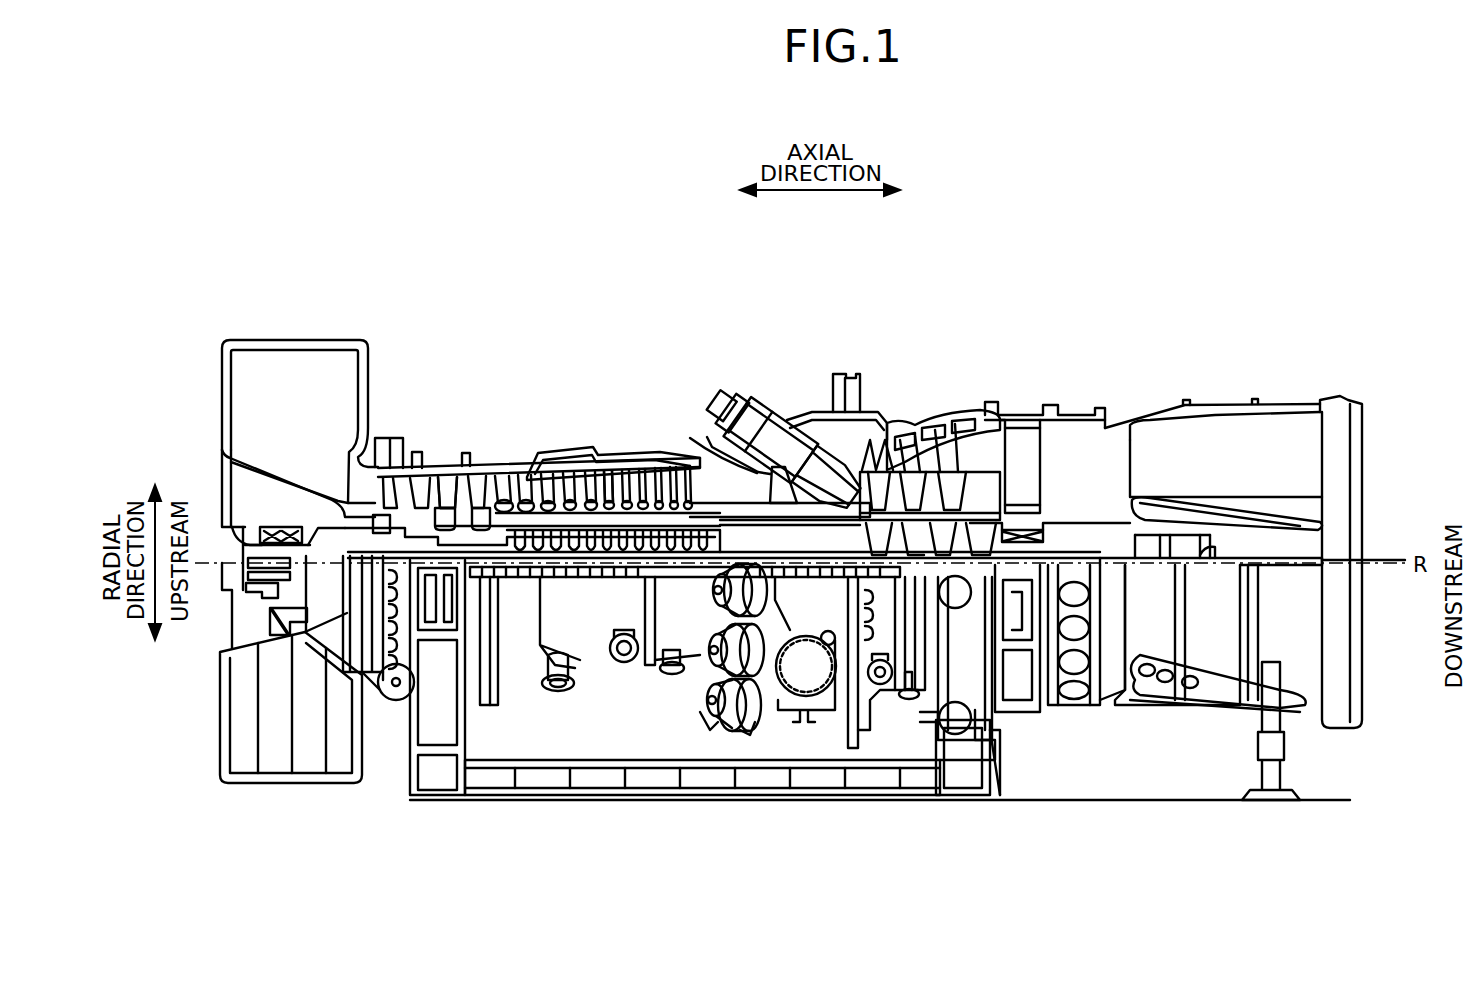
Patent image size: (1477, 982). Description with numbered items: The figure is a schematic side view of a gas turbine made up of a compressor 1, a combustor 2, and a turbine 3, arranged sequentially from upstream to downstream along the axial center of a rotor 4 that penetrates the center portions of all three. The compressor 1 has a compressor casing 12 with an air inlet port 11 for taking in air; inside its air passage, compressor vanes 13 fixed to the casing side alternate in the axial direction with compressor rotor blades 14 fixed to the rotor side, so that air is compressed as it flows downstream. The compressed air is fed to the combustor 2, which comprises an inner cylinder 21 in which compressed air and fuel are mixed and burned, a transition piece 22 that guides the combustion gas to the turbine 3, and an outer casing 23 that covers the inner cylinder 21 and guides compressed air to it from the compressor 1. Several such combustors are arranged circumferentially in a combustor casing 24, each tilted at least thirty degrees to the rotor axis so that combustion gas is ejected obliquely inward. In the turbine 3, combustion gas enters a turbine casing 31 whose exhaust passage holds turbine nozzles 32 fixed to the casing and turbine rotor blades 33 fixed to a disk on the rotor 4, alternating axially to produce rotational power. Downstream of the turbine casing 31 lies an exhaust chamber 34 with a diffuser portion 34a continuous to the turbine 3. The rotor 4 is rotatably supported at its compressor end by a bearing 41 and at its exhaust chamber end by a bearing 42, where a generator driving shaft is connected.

The compressor 1 is at (445, 408).
The combustor 2 is at (799, 378).
The turbine 3 is at (988, 420).
The rotor 4 is at (760, 538).
The air inlet port 11 is at (237, 402).
The compressor casing 12 is at (622, 478).
The compressor vane 13 is at (447, 480).
The compressor rotor blade 14 is at (502, 490).
The inner cylinder 21 is at (764, 420).
The transition piece 22 is at (800, 448).
The outer casing 23 is at (745, 410).
The combustor casing 24 is at (806, 404).
The turbine casing 31 is at (930, 425).
The turbine nozzle 32 is at (858, 460).
The turbine rotor blade 33 is at (878, 462).
The exhaust chamber 34 is at (1231, 520).
The diffuser portion 34a is at (1100, 445).
The bearing 41 is at (258, 530).
The bearing 42 is at (1352, 556).